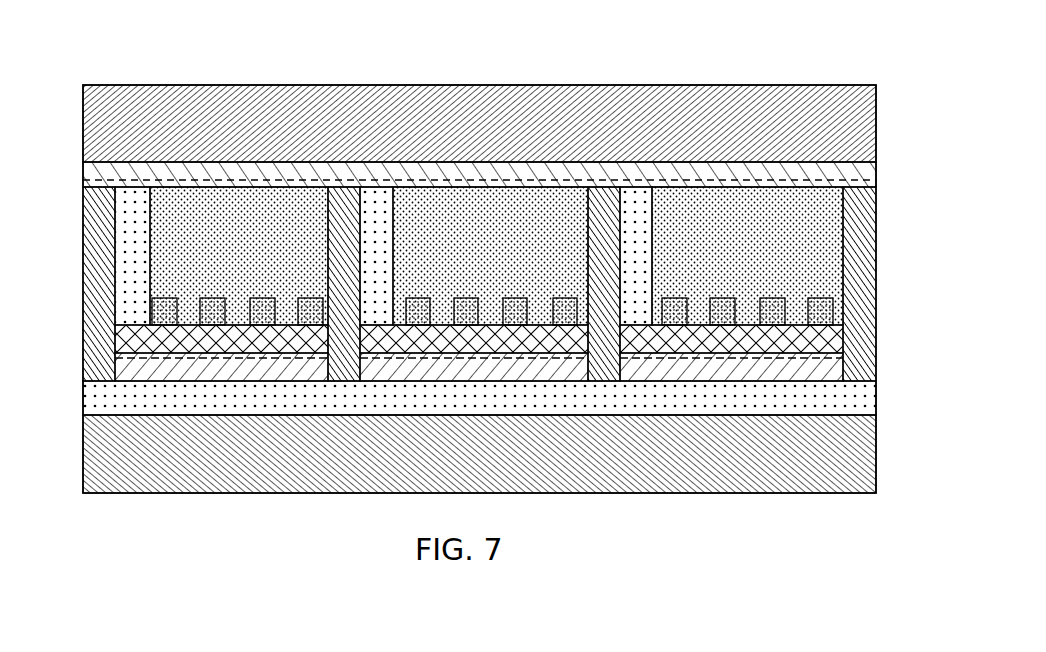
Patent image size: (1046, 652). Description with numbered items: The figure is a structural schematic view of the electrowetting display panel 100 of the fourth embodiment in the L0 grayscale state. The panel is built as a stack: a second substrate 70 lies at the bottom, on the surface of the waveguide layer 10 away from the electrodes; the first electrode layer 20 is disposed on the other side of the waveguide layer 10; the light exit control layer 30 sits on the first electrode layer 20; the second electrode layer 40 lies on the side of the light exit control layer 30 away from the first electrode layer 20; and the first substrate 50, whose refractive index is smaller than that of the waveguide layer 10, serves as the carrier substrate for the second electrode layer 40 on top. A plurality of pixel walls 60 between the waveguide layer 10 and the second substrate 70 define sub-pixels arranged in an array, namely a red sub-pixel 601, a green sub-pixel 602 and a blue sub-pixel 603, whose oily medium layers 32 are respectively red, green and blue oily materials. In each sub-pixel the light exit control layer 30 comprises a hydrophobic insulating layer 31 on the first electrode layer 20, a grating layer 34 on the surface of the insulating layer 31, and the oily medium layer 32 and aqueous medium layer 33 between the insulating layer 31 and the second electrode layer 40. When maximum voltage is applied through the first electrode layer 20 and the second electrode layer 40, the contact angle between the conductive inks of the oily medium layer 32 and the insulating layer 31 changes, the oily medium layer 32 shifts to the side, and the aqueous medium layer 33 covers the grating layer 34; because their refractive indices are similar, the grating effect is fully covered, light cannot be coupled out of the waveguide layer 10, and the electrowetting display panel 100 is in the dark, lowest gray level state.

The electrowetting display panel 100 is at (88, 52).
The first substrate 50 is at (876, 124).
The second electrode layer 40 is at (876, 170).
The pixel walls 60 is at (876, 215).
The red sub-pixel 601 is at (240, 187).
The green sub-pixel 602 is at (481, 187).
The blue sub-pixel 603 is at (791, 199).
The light exit control layer 30 is at (791, 270).
The aqueous medium layer 33 is at (640, 283).
The oily medium layer 32 is at (876, 271).
The grating layer 34 is at (833, 311).
The insulating layer 31 is at (828, 339).
The first electrode layer 20 is at (830, 368).
The waveguide layer 10 is at (858, 400).
The second substrate 70 is at (876, 449).